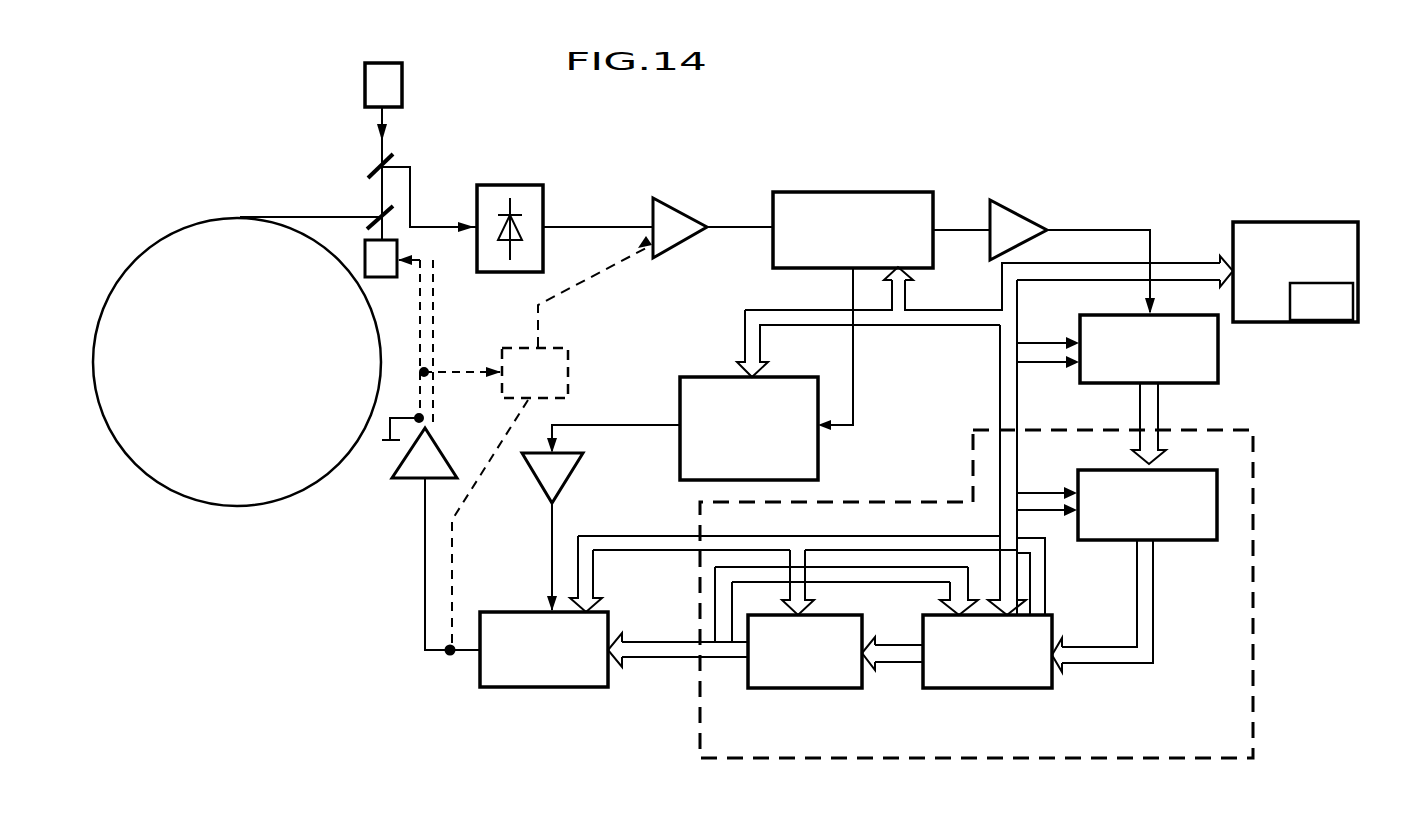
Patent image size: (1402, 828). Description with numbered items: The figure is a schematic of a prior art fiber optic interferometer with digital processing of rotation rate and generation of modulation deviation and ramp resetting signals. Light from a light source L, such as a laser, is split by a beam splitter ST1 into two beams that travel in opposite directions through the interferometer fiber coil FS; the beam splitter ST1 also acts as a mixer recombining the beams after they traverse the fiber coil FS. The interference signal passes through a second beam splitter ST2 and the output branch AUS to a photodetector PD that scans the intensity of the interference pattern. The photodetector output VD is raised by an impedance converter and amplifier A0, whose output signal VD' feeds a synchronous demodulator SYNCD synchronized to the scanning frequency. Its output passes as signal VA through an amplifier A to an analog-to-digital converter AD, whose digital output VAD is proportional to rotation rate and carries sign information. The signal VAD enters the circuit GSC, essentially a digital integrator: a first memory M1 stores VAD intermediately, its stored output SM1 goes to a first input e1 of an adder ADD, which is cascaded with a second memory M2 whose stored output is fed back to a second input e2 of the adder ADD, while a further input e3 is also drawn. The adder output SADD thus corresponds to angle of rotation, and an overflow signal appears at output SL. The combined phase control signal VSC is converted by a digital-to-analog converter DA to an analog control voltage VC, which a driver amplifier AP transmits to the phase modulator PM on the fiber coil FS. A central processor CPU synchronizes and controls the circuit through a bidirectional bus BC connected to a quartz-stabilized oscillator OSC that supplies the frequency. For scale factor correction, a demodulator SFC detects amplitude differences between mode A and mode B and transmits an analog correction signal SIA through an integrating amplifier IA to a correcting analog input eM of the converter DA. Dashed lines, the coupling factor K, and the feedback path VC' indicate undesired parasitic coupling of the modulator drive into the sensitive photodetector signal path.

The light source L is at (402, 86).
The second beam splitter ST2 is at (372, 165).
The beam splitter ST1 is at (375, 217).
The output branch AUS is at (440, 227).
The photodetector PD is at (525, 272).
The photodetector output VD is at (594, 192).
The impedance converter and amplifier A0 is at (681, 213).
The amplifier output signal VD' is at (751, 189).
The coupling factor K is at (496, 499).
The synchronous demodulator SYNCD is at (868, 190).
The amplifier A is at (1030, 220).
The demodulator output signal VA is at (1114, 230).
The bidirectional bus BC is at (1192, 263).
The central processor CPU is at (1295, 272).
The quartz-stabilized oscillator OSC is at (1321, 301).
The analog-to-digital converter AD is at (1218, 360).
The digital rotation rate signal VAD is at (1158, 408).
The digital integrator circuit GSC is at (1253, 448).
The first memory M1 is at (1190, 540).
The overflow output SL is at (1045, 580).
The intermediate stored output signal SM1 is at (1153, 640).
The first input of adder e1 is at (1054, 673).
The adder ADD is at (975, 688).
The adder output signal SADD is at (893, 665).
The second memory M2 is at (800, 688).
The second input of adder e2 is at (945, 612).
The third input of adder e3 is at (993, 610).
The combined phase control signal VSC is at (655, 665).
The digital-to-analog converter DA is at (538, 687).
The correcting analog input eM is at (540, 612).
The analog correction signal SIA is at (551, 535).
The integrating amplifier IA is at (572, 482).
The scale factor demodulator SFC is at (818, 462).
The control voltage feedback VC' is at (461, 344).
The phase modulator PM is at (385, 277).
The driver amplifier AP is at (410, 470).
The analog control voltage VC is at (412, 684).
The fiber coil FS is at (303, 490).